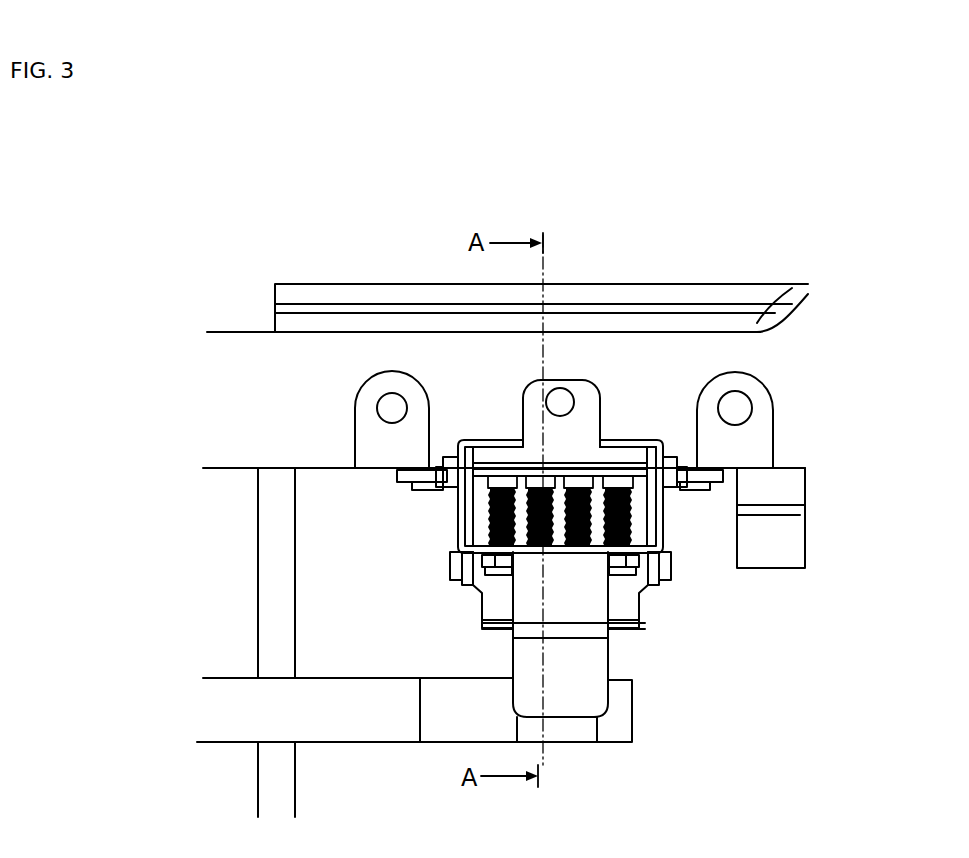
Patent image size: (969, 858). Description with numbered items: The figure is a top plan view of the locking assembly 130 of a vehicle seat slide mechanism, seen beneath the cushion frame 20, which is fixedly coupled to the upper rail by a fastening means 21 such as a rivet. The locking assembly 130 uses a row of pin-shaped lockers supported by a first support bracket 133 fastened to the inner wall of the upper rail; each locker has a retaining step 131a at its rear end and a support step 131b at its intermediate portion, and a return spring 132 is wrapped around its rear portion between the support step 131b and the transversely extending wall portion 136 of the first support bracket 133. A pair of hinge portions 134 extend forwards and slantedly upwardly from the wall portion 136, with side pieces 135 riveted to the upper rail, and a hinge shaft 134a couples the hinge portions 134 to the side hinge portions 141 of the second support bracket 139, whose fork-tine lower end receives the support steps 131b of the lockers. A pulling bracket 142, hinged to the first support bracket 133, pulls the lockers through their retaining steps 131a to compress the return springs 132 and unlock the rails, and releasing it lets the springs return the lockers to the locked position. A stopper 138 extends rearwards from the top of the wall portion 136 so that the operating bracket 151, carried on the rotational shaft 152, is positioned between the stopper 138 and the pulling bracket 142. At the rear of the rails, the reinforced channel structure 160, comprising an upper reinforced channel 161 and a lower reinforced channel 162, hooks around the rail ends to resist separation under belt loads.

The cushion frame 20 is at (260, 348).
The fastening means 21 is at (390, 400).
The locking assembly 130 is at (590, 510).
The retaining step 131a is at (503, 572).
The support step 131b is at (500, 465).
The return spring 132 is at (594, 488).
The first support bracket 133 is at (447, 528).
The hinge portions 134 is at (662, 507).
The hinge shaft 134a is at (568, 472).
The side pieces 135 is at (403, 477).
The transversely extending wall portion 136 is at (650, 607).
The stopper 138 is at (570, 697).
The second support bracket 139 is at (518, 402).
The side hinge portions 141 is at (650, 460).
The pulling bracket 142 is at (629, 631).
The operating bracket 151 is at (348, 715).
The rotational shaft 152 is at (253, 628).
The reinforced channel structure 160 is at (595, 420).
The upper reinforced channel 161 is at (808, 287).
The lower reinforced channel 162 is at (728, 297).